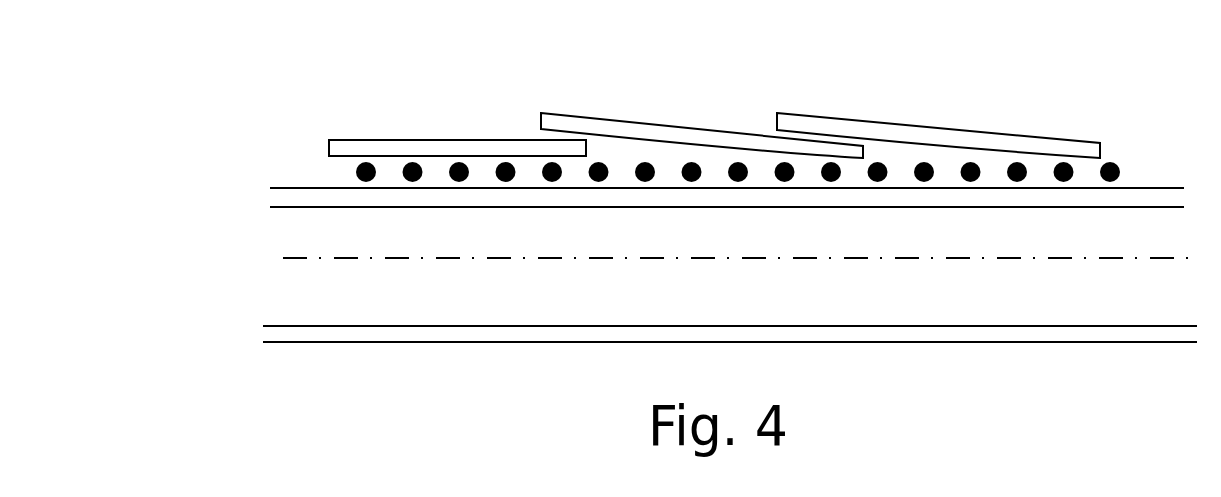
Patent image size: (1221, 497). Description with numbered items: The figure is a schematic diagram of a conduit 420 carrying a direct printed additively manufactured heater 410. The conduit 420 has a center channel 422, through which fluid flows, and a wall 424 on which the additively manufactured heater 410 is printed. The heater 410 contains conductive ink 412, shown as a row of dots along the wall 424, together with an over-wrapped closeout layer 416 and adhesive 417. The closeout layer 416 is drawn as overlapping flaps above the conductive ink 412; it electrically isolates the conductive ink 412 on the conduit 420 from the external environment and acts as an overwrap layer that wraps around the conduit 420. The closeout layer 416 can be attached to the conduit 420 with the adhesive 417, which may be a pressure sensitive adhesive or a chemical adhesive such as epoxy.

The additively manufactured heater 410 is at (757, 85).
The conductive ink 412 is at (1117, 170).
The closeout layer 416 is at (1032, 138).
The adhesive 417 is at (1103, 158).
The conduit 420 is at (272, 255).
The center channel 422 is at (462, 245).
The wall 424 is at (270, 335).